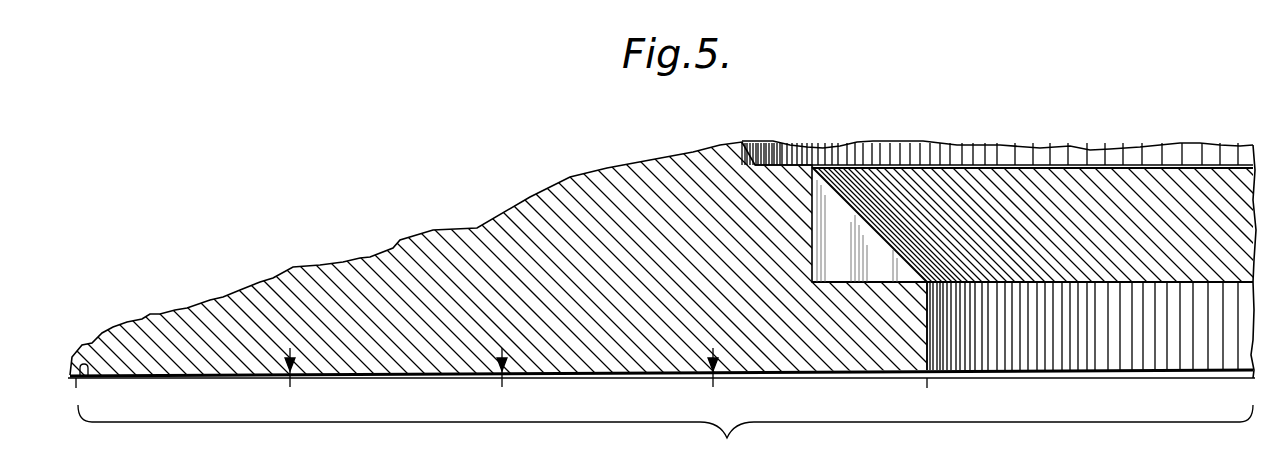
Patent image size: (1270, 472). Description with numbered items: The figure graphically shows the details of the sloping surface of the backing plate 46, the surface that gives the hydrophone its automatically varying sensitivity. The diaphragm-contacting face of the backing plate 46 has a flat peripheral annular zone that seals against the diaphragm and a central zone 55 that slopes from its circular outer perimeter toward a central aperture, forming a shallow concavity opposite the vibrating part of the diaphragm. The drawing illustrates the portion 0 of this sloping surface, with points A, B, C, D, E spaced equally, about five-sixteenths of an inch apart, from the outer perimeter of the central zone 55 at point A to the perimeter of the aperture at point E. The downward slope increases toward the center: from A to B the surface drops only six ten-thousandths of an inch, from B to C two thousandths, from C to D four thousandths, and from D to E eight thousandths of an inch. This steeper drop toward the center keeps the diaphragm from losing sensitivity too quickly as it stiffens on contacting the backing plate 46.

The backing plate 46 is at (307, 278).
The central zone 55 is at (838, 372).
The point A is at (78, 391).
The point B is at (289, 376).
The point C is at (501, 376).
The point D is at (714, 376).
The point E is at (924, 391).
The portion O of the sloping surface 0 is at (665, 431).